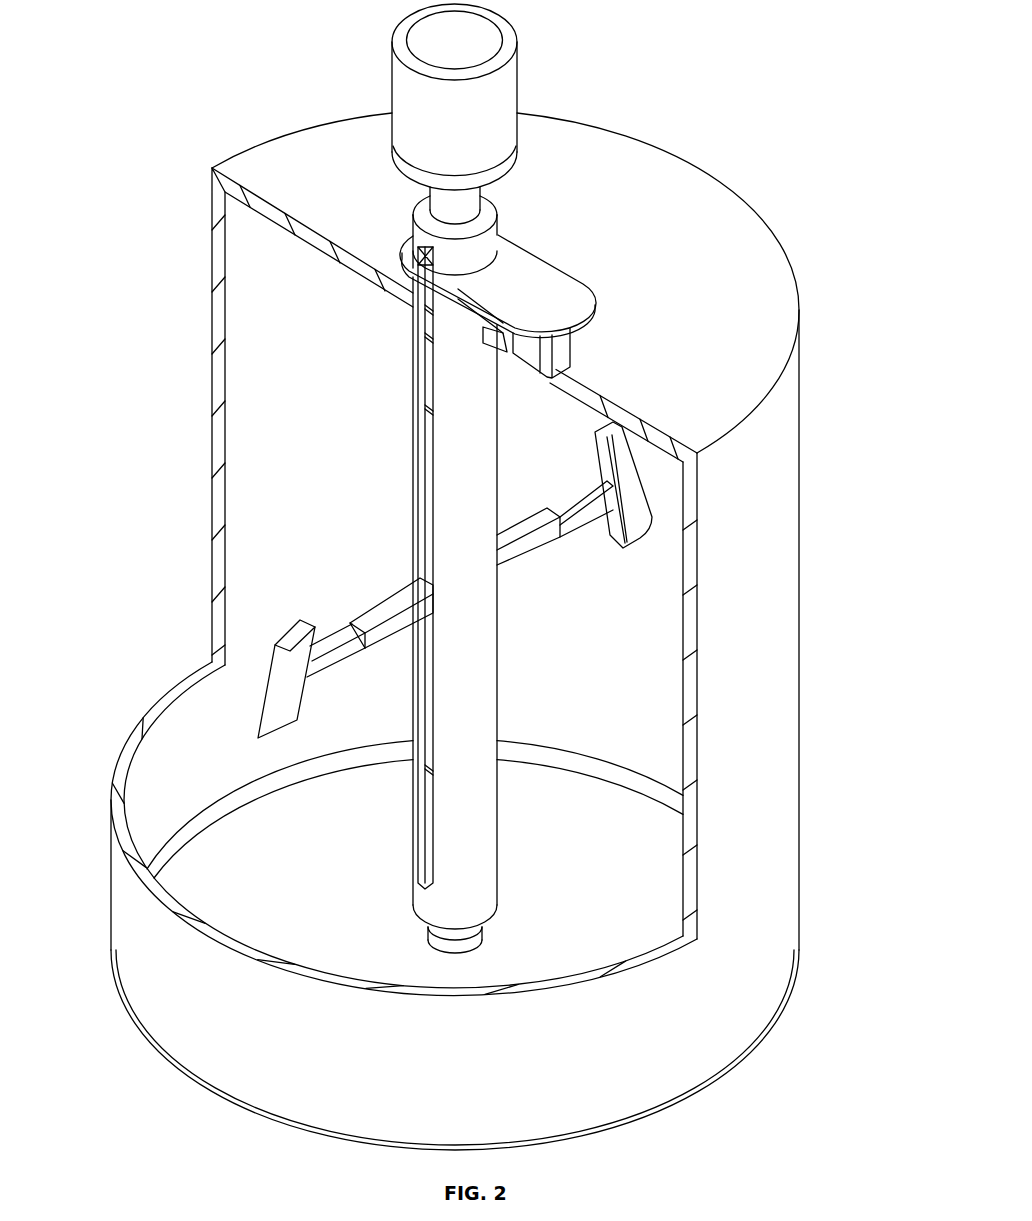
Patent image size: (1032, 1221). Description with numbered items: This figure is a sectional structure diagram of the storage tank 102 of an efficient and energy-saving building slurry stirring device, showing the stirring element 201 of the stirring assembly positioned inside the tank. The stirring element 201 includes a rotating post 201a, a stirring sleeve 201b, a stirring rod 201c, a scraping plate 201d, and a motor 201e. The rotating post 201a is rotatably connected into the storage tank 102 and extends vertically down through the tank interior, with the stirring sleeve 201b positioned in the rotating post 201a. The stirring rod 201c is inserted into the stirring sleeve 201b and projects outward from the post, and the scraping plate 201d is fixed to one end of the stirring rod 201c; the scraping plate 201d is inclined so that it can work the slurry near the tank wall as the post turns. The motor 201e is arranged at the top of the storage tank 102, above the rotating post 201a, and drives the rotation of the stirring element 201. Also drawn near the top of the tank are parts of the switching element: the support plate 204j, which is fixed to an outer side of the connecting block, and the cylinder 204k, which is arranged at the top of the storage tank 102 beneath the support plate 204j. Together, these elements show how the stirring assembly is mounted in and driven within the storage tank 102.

The storage tank 102 is at (762, 592).
The stirring element 201 is at (143, 685).
The rotating post 201a is at (471, 514).
The stirring sleeve 201b is at (400, 603).
The stirring rod 201c is at (328, 643).
The scraping plate 201d is at (288, 675).
The motor 201e is at (440, 172).
The support plate 204j is at (545, 288).
The cylinder 204k is at (555, 352).